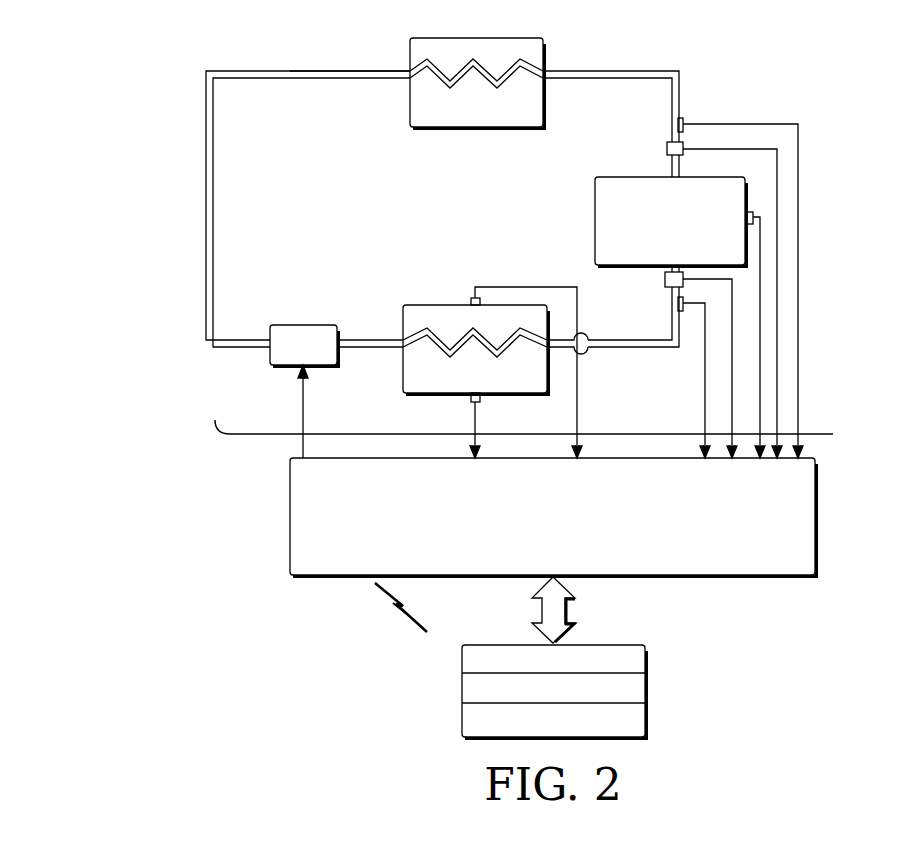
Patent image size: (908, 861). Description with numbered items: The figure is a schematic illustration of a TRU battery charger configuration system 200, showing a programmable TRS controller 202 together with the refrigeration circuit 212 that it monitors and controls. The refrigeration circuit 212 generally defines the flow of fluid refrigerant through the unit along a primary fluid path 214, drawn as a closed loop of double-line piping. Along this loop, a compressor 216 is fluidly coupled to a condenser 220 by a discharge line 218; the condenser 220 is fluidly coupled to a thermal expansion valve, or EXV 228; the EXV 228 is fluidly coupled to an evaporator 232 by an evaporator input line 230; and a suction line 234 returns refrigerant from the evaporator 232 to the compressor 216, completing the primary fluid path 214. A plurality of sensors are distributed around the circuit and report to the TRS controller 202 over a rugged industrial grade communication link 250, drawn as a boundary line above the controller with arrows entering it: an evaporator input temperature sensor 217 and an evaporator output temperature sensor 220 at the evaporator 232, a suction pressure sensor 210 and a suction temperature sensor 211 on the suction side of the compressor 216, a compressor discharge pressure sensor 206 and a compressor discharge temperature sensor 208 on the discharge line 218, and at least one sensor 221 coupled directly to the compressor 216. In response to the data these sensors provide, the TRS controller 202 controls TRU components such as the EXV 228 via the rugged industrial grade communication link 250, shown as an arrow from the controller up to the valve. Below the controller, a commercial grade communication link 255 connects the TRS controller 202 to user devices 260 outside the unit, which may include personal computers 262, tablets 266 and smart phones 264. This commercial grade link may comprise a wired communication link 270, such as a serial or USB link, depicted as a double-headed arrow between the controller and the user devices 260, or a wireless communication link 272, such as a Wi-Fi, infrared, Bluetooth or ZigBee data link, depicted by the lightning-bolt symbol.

The TRU battery charger configuration system 200 is at (96, 44).
The programmable TRS controller 202 is at (290, 515).
The compressor discharge pressure sensor 206 is at (667, 149).
The compressor discharge temperature sensor 208 is at (683, 120).
The suction pressure sensor 210 is at (664, 281).
The suction temperature sensor 211 is at (684, 313).
The refrigeration circuit 212 is at (218, 208).
The primary fluid path 214 is at (298, 70).
The compressor 216 is at (713, 178).
The evaporator input temperature sensor 217 is at (470, 403).
The discharge line 218 is at (648, 71).
The condenser 220 is at (506, 38).
The sensor coupled to the compressor 221 is at (753, 212).
The thermal expansion valve (EXV) 228 is at (300, 325).
The evaporator input line 230 is at (365, 339).
The evaporator 232 is at (540, 394).
The suction line 234 is at (632, 349).
The rugged industrial grade communication link 250 is at (516, 415).
The commercial grade communication link 255 is at (580, 615).
The user devices 260 is at (652, 690).
The personal computer 262 is at (462, 657).
The smart phone 264 is at (647, 718).
The tablet 266 is at (462, 688).
The wired communication link 270 is at (540, 617).
The wireless communication link 272 is at (392, 620).